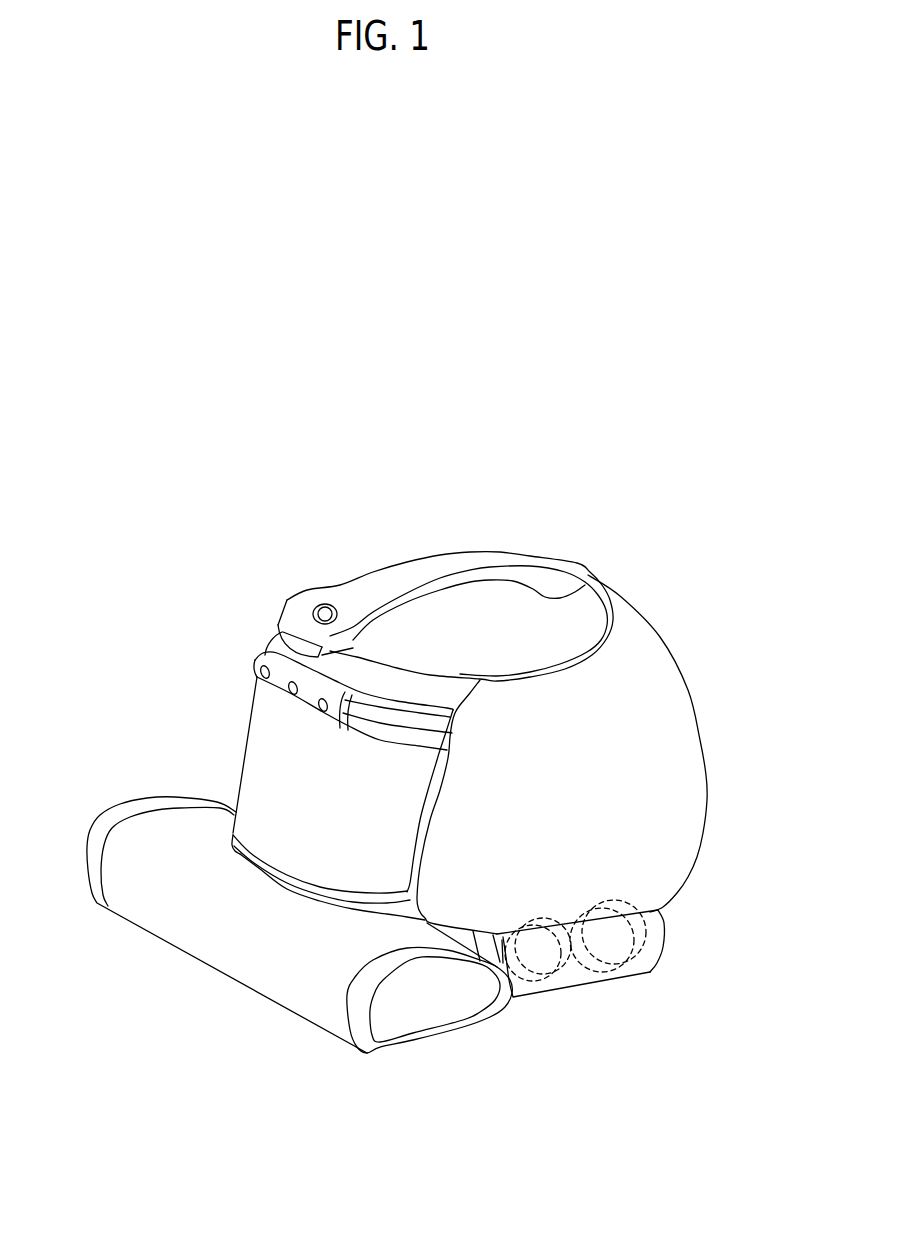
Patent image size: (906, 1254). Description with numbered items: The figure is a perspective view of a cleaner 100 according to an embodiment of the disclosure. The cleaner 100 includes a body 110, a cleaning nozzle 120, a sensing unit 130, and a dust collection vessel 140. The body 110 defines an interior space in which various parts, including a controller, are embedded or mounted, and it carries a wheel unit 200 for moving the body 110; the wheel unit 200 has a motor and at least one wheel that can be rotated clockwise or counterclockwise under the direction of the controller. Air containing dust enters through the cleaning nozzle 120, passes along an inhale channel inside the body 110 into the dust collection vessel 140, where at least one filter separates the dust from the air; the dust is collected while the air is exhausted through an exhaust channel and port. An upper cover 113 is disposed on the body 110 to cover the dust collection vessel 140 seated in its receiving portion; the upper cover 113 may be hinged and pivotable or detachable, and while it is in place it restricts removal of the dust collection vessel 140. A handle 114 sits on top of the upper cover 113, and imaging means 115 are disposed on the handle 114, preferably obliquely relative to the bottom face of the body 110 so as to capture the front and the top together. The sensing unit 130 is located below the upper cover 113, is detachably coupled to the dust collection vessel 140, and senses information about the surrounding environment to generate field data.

The cleaner 100 is at (263, 560).
The body 110 is at (653, 713).
The upper cover 113 is at (538, 616).
The handle 114 is at (455, 560).
The imaging means 115 is at (327, 604).
The cleaning nozzle 120 is at (170, 910).
The sensing unit 130 is at (250, 655).
The dust collection vessel 140 is at (268, 752).
The wheel unit 200 is at (680, 950).